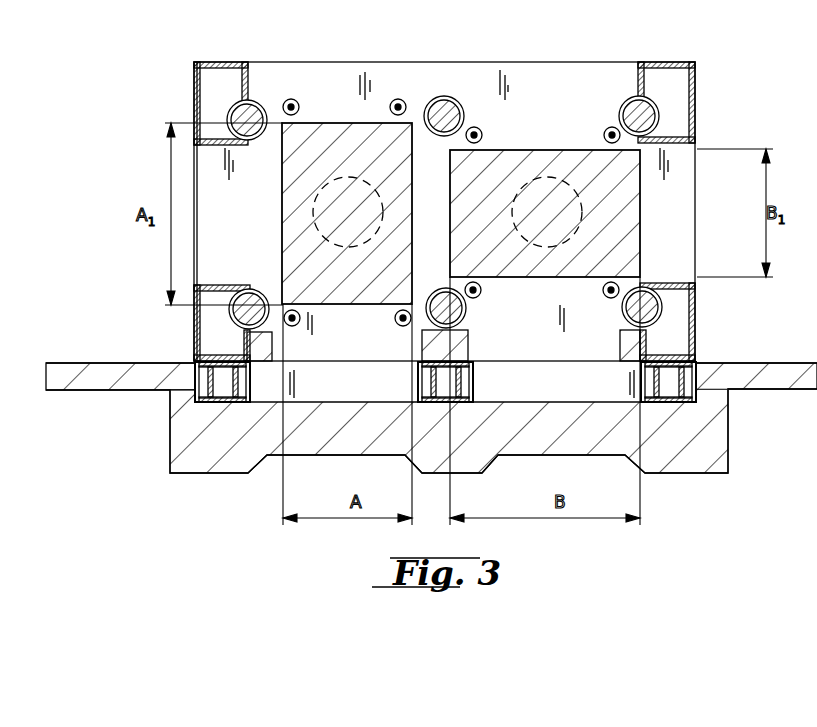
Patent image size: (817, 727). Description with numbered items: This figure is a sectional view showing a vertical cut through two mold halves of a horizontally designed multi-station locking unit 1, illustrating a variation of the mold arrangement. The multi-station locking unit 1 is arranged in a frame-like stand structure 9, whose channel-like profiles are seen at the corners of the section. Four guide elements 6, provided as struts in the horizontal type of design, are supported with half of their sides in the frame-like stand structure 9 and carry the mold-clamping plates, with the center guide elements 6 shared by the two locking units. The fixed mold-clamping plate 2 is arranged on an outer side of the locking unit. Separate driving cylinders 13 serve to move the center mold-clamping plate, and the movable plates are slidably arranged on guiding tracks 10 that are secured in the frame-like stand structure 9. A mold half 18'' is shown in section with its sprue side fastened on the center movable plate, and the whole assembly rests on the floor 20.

The multi-station locking unit 1 is at (732, 100).
The fixed mold-clamping plate 2 is at (553, 68).
The guide elements 6 is at (258, 107).
The frame-like stand structure 9 is at (208, 62).
The guiding tracks 10 is at (273, 357).
The driving cylinders 13 is at (390, 105).
The mold half 18'' is at (483, 213).
The floor 20 is at (115, 362).